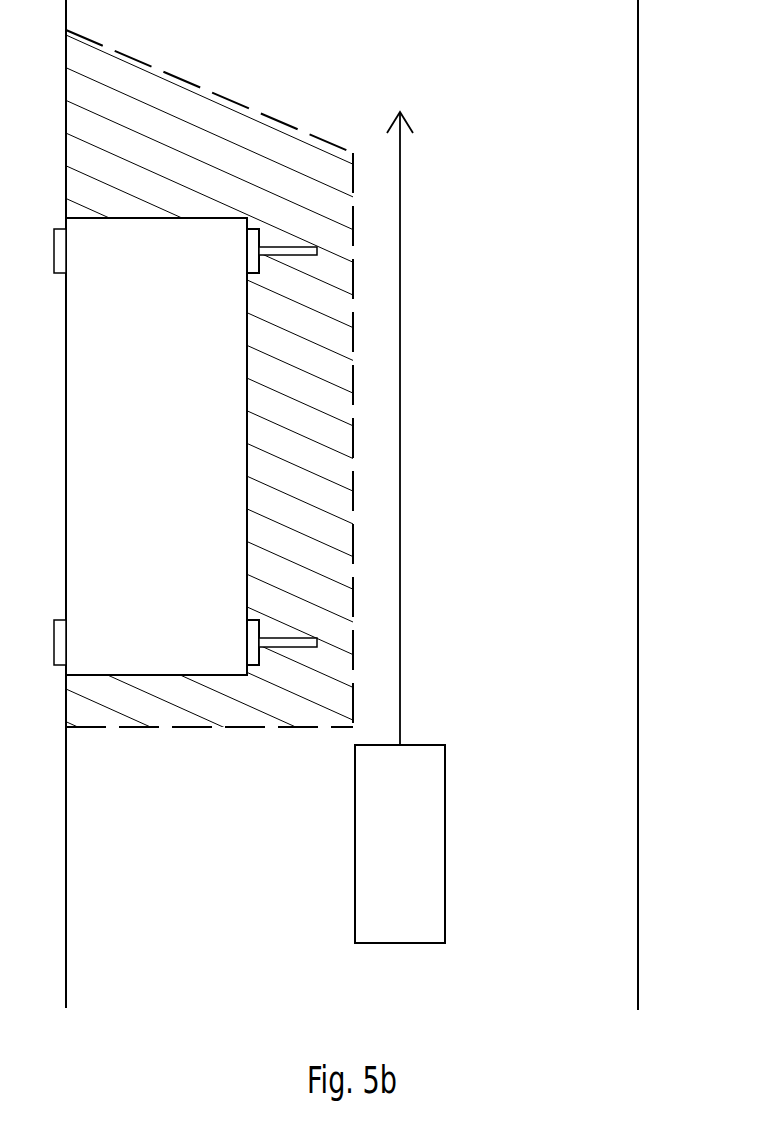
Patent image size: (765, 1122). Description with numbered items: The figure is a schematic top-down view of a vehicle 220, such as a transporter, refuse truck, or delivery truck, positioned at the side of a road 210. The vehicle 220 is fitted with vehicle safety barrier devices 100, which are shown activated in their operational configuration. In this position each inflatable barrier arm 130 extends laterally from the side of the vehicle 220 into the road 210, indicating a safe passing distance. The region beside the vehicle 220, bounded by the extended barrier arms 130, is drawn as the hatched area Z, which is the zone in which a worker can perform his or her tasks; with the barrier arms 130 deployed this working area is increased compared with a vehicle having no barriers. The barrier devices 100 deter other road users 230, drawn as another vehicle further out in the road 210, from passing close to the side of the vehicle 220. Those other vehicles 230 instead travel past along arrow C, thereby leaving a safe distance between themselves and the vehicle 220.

The vehicle safety barrier device 100 is at (260, 227).
The barrier arm 130 is at (317, 253).
The vehicle 220 is at (170, 463).
The other road user 230 is at (420, 857).
The road 210 is at (505, 555).
The arrow C is at (400, 188).
The hatched area Z is at (345, 511).